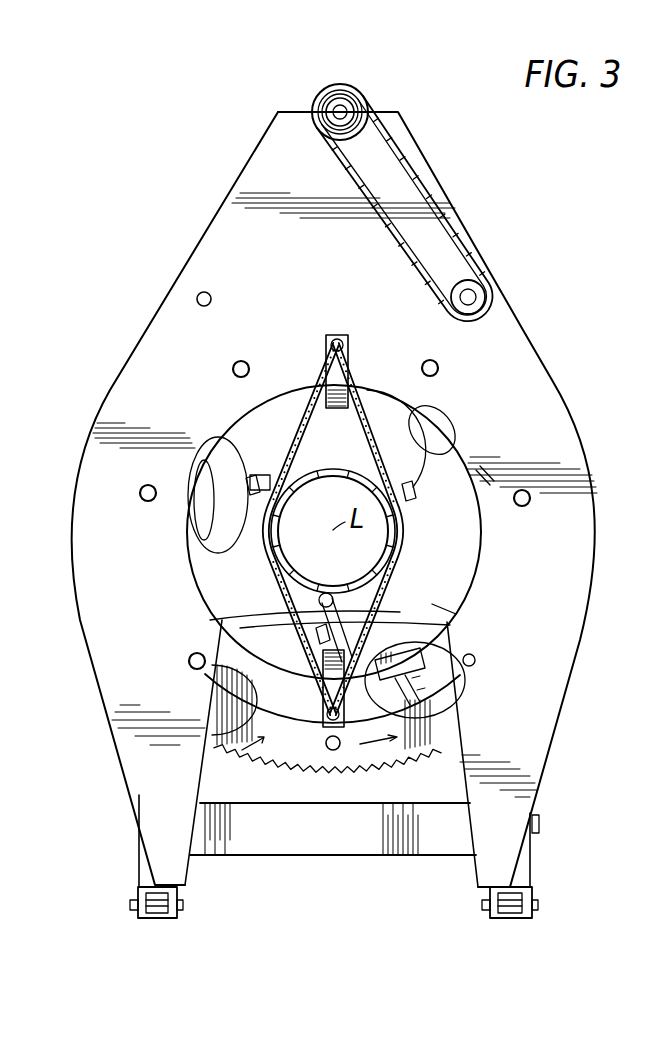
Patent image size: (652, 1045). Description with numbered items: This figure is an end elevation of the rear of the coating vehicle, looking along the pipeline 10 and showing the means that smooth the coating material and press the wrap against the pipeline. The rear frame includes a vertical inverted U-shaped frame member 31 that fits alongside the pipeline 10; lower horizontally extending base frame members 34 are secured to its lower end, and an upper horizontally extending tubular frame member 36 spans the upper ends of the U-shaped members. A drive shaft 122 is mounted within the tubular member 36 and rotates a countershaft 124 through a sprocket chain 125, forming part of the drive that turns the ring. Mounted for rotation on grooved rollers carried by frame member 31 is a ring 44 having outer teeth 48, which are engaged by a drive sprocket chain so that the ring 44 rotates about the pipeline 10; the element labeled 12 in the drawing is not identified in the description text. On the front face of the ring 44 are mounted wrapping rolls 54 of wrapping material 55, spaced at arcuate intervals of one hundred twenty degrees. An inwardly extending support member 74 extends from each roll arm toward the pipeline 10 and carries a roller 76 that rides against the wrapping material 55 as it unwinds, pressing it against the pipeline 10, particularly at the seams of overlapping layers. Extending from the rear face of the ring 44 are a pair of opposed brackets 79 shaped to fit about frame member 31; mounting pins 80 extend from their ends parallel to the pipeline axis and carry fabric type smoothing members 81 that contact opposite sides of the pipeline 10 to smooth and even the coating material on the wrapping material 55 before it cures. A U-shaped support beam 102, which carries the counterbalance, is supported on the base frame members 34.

The pipeline 10 is at (290, 510).
The clamp ring 12 is at (335, 468).
The inverted U-shaped frame member 31 is at (562, 643).
The base frame member 34 is at (138, 905).
The tubular frame member 36 is at (318, 95).
The ring 44 is at (245, 738).
The outer teeth 48 is at (285, 765).
The wrapping roll 54 is at (218, 463).
The wrapping material 55 is at (265, 553).
The support member 74 is at (262, 470).
The roller 76 is at (237, 488).
The bracket 79 is at (341, 372).
The mounting pin 80 is at (330, 343).
The smoothing member 81 is at (300, 620).
The support beam 102 is at (333, 858).
The drive shaft 122 is at (366, 100).
The countershaft 124 is at (478, 292).
The sprocket chain 125 is at (437, 185).